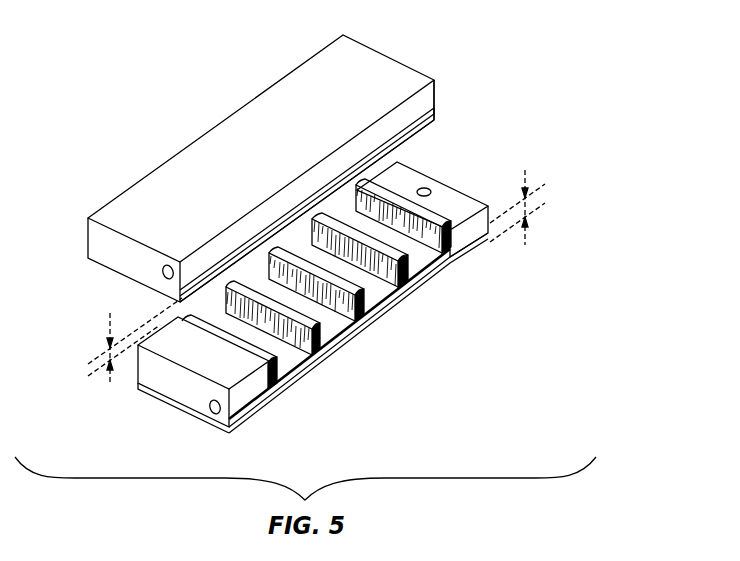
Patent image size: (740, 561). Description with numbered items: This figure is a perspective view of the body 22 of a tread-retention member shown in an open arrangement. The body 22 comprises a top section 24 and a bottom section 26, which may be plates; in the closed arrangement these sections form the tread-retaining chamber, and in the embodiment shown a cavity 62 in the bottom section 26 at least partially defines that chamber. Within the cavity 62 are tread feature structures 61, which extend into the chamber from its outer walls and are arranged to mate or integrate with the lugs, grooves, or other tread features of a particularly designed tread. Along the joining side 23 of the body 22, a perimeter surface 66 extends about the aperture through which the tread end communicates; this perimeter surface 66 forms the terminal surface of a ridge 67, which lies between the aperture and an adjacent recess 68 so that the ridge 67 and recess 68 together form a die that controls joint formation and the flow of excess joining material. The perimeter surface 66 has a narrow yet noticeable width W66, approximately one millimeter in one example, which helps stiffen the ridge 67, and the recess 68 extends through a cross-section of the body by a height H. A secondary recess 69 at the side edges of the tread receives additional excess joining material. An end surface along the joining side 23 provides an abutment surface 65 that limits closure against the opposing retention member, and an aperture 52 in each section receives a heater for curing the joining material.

The body 22 is at (140, 42).
The joining side 23 is at (213, 255).
The top section 24 is at (205, 155).
The bottom section 26 is at (146, 378).
The aperture 52 is at (165, 280).
The tread feature structures 61 is at (278, 257).
The cavity 62 is at (375, 300).
The abutment surface 65 is at (432, 93).
The perimeter surface 66 is at (412, 130).
The ridge 67 is at (437, 117).
The recess 68 is at (438, 109).
The secondary recess 69 is at (455, 226).
The perimeter surface width W66 is at (108, 315).
The height H is at (530, 180).